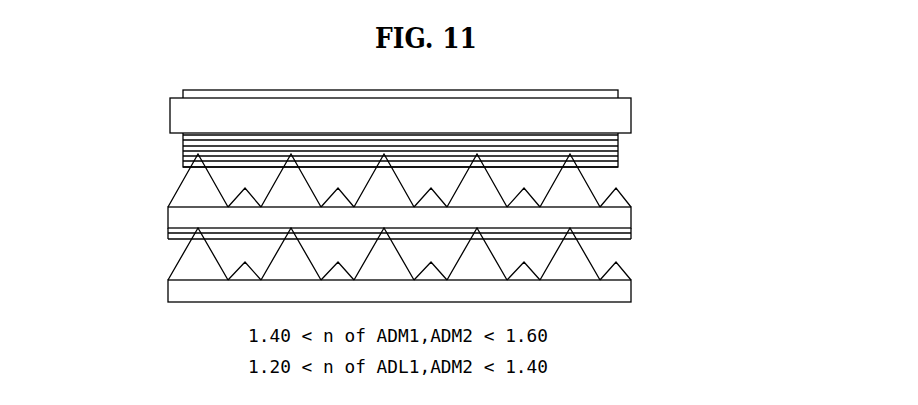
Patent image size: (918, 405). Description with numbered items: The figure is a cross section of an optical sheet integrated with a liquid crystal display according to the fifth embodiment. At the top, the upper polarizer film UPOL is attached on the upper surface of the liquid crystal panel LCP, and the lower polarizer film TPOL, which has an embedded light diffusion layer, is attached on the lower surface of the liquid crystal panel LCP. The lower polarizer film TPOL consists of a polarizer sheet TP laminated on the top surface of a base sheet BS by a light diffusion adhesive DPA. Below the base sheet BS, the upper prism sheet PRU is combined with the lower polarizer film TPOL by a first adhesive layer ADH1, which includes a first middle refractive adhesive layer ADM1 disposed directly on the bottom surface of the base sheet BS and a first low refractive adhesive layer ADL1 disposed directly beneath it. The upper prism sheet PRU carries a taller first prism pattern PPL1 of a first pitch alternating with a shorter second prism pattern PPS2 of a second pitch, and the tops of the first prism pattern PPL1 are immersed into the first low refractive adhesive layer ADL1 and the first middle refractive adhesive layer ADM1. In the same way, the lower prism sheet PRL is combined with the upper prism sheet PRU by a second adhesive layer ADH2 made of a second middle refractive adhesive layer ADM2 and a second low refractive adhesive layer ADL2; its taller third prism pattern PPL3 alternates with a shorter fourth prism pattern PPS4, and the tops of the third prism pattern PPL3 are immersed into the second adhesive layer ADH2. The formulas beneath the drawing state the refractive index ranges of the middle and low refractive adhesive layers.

The upper polarizer film UPOL is at (618, 90).
The liquid crystal panel LCP is at (625, 113).
The polarizer sheet TP is at (618, 135).
The light diffusion adhesive DPA is at (618, 146).
The base sheet BS is at (618, 156).
The lower polarizer film TPOL is at (474, 135).
The first middle refractive adhesive layer ADM1 is at (618, 161).
The first low refractive adhesive layer ADL1 is at (618, 167).
The first adhesive layer ADH1 is at (480, 195).
The second middle refractive adhesive layer ADM2 is at (631, 233).
The second low refractive adhesive layer ADL2 is at (631, 239).
The second adhesive layer ADH2 is at (473, 252).
The first prism pattern PPL1 is at (192, 182).
The second prism pattern PPS2 is at (237, 200).
The upper prism sheet PRU is at (356, 191).
The third prism pattern PPL3 is at (192, 259).
The fourth prism pattern PPS4 is at (237, 277).
The lower prism sheet PRL is at (356, 265).